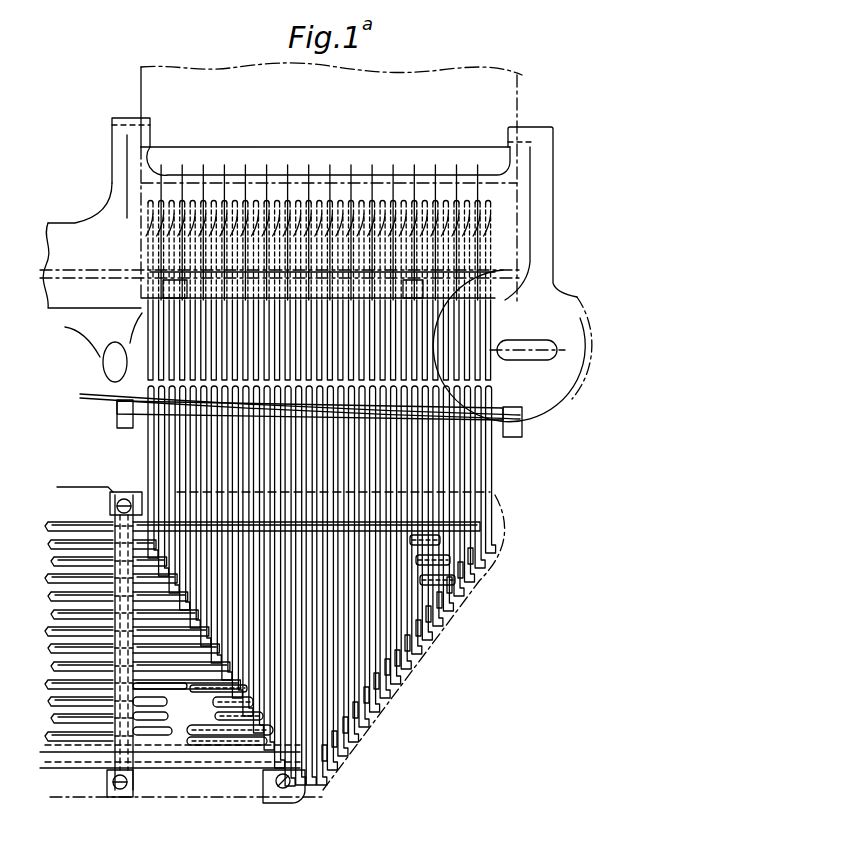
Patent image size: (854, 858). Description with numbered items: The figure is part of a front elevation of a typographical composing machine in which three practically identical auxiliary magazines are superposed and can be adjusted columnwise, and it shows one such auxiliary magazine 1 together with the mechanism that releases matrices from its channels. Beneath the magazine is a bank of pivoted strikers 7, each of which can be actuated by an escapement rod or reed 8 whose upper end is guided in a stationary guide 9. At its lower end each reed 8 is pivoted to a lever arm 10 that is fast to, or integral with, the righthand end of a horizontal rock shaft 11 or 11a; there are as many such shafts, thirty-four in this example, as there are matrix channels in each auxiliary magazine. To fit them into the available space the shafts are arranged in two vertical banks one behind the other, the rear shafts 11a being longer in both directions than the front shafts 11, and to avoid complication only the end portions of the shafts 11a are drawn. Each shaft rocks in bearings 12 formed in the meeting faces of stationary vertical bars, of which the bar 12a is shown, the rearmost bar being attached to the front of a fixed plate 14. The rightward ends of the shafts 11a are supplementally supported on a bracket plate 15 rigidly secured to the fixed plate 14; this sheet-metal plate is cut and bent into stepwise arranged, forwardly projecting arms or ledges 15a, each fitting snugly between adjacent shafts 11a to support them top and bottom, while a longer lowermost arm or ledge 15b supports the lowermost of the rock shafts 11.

The auxiliary magazine 1 is at (500, 108).
The striker 7 is at (175, 373).
The escapement rod or reed 8 is at (190, 480).
The stationary guide 9 is at (524, 423).
The lever arm 10 is at (300, 690).
The rock shaft 11 is at (62, 566).
The rock shaft 11a is at (522, 505).
The bearing 12 is at (113, 513).
The stationary vertical bar 12a is at (117, 770).
The fixed plate 14 is at (86, 487).
The bracket plate 15 is at (296, 786).
The arm or ledge 15a is at (385, 690).
The lowermost arm or ledge 15b is at (272, 790).